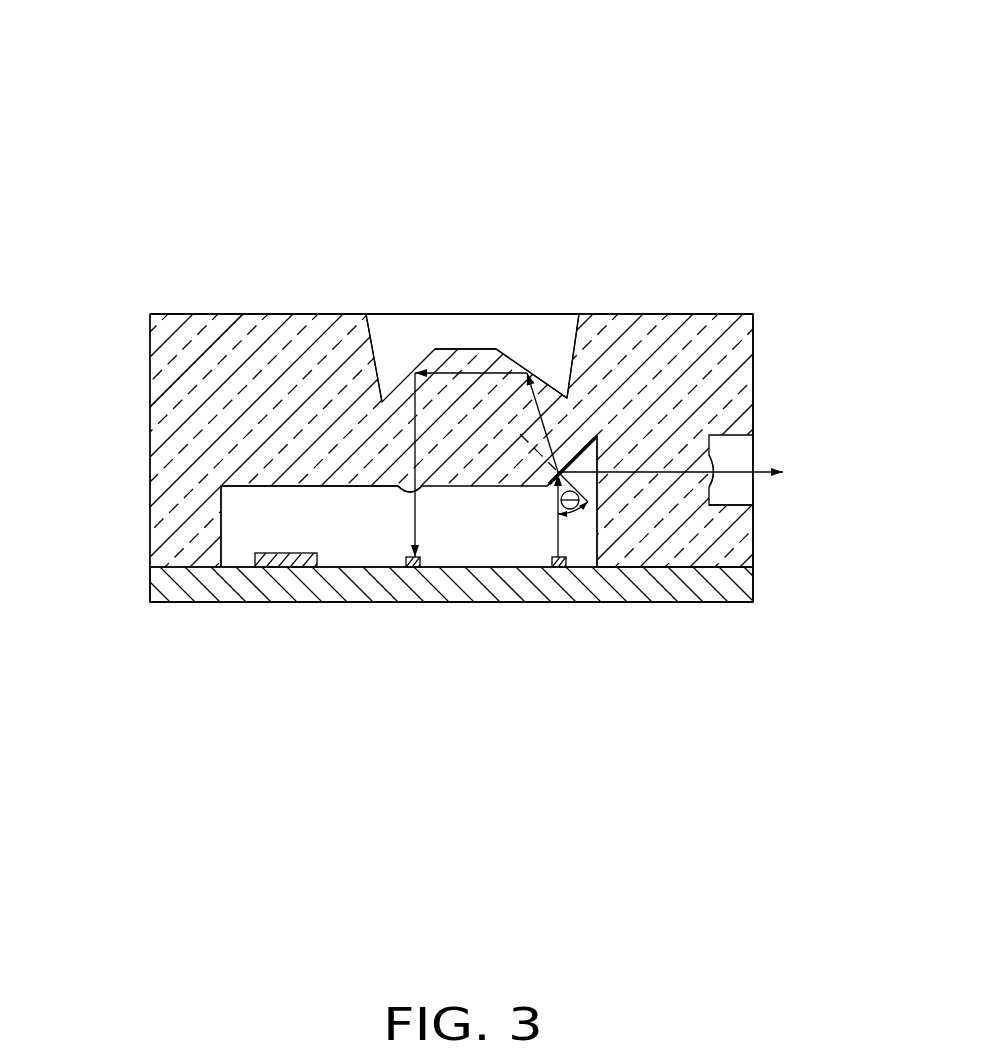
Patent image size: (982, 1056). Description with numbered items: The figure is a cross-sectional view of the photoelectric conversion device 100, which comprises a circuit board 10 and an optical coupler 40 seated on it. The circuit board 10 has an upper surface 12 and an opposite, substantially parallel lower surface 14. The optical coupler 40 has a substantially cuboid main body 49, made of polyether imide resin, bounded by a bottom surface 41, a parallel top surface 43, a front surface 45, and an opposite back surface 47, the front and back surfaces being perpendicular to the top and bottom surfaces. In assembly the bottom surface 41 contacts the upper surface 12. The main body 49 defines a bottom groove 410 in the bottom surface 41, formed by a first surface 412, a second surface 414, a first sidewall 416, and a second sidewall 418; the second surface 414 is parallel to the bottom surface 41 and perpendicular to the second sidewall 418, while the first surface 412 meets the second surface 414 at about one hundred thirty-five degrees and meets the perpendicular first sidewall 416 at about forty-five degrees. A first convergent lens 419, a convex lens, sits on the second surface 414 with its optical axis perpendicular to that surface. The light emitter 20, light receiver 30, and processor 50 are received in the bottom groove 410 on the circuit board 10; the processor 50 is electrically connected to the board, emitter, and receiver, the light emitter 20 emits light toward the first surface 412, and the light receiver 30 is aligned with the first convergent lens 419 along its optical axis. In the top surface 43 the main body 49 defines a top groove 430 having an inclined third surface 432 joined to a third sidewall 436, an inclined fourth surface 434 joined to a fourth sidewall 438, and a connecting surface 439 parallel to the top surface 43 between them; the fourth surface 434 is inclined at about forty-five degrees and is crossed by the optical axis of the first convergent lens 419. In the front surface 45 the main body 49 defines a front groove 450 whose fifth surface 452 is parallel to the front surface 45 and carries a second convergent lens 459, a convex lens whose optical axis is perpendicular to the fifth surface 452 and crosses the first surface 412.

The photoelectric conversion device 100 is at (461, 63).
The circuit board 10 is at (170, 585).
The upper surface 12 is at (175, 567).
The lower surface 14 is at (180, 603).
The light emitter 20 is at (558, 566).
The light receiver 30 is at (416, 568).
The processor 50 is at (284, 558).
The optical coupler 40 is at (757, 378).
The bottom surface 41 is at (698, 573).
The top surface 43 is at (721, 313).
The front surface 45 is at (753, 338).
The back surface 47 is at (148, 393).
The main body 49 is at (190, 355).
The bottom groove 410 is at (257, 512).
The first surface 412 is at (597, 436).
The second surface 414 is at (337, 486).
The first sidewall 416 is at (597, 532).
The second sidewall 418 is at (222, 530).
The first convergent lens 419 is at (402, 487).
The top groove 430 is at (442, 330).
The third surface 432 is at (519, 335).
The fourth surface 434 is at (399, 378).
The third sidewall 436 is at (570, 357).
The fourth sidewall 438 is at (379, 347).
The connecting surface 439 is at (473, 349).
The front groove 450 is at (740, 452).
The fifth surface 452 is at (710, 505).
The second convergent lens 459 is at (715, 478).